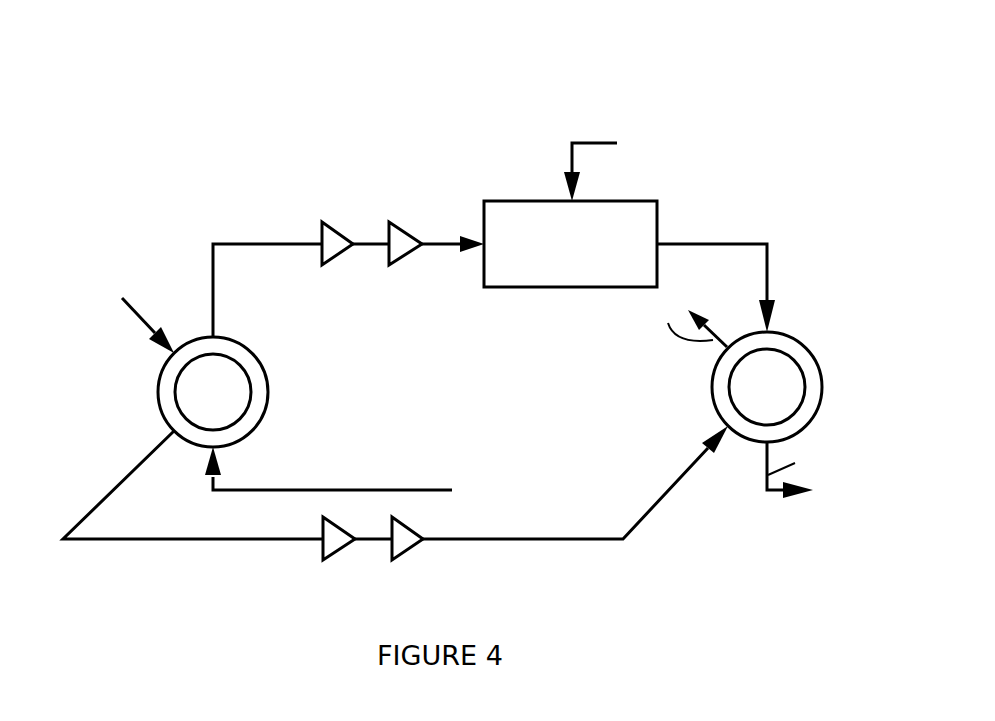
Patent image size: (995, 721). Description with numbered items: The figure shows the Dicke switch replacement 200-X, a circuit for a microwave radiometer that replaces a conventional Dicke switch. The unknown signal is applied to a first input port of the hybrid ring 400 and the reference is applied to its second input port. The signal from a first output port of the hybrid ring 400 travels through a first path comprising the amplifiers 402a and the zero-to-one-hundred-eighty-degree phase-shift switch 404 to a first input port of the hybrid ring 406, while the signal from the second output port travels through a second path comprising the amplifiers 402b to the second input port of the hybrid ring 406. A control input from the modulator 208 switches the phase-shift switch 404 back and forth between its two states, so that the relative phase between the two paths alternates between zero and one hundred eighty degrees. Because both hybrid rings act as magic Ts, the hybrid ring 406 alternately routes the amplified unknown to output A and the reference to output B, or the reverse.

The Dicke switch replacement 200-X is at (452, 297).
The hybrid ring 400 is at (267, 413).
The amplifiers 402a is at (413, 237).
The amplifiers 402b is at (412, 568).
The 0°-180° phase-shift switch 404 is at (550, 290).
The hybrid ring 406 is at (715, 405).
The modulator 208 is at (643, 168).